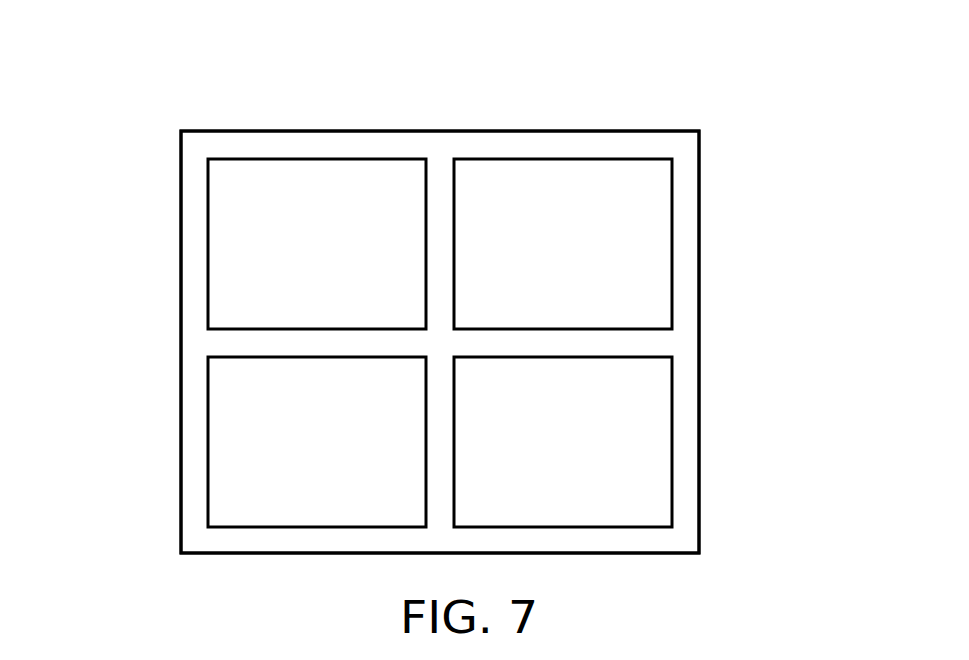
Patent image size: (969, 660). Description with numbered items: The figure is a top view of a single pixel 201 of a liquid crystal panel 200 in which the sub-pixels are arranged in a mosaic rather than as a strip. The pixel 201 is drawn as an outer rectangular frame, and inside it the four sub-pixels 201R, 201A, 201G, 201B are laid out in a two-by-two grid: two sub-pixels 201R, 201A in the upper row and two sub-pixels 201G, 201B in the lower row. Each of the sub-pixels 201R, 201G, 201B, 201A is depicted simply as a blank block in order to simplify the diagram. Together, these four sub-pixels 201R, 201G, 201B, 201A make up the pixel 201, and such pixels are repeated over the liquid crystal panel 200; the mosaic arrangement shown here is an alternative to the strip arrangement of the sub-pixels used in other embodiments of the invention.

The liquid crystal panel 200 is at (112, 52).
The pixel 201 is at (605, 130).
The sub-pixel 201R is at (208, 241).
The sub-pixel 201A is at (672, 243).
The sub-pixel 201G is at (208, 440).
The sub-pixel 201B is at (672, 440).